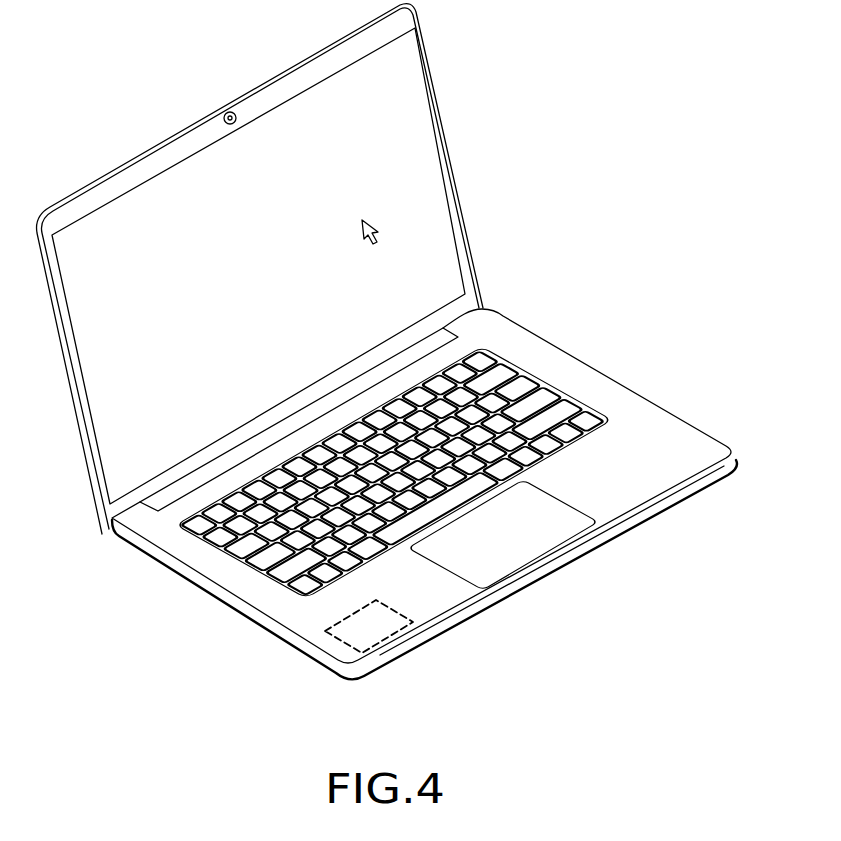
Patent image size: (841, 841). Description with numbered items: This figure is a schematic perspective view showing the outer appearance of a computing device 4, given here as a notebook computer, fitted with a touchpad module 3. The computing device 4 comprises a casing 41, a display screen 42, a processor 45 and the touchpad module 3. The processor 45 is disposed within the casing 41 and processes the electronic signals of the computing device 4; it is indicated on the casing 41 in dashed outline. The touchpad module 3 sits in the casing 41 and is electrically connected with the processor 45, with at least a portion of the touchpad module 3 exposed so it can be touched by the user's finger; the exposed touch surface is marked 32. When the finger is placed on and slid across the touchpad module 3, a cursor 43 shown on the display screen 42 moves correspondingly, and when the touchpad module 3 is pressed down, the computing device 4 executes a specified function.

The computing device 4 is at (610, 116).
The casing 41 is at (632, 407).
The display screen 42 is at (415, 88).
The cursor 43 is at (370, 218).
The touchpad module 3 is at (503, 553).
The touch pad surface 32 is at (502, 558).
The processor 45 is at (357, 633).